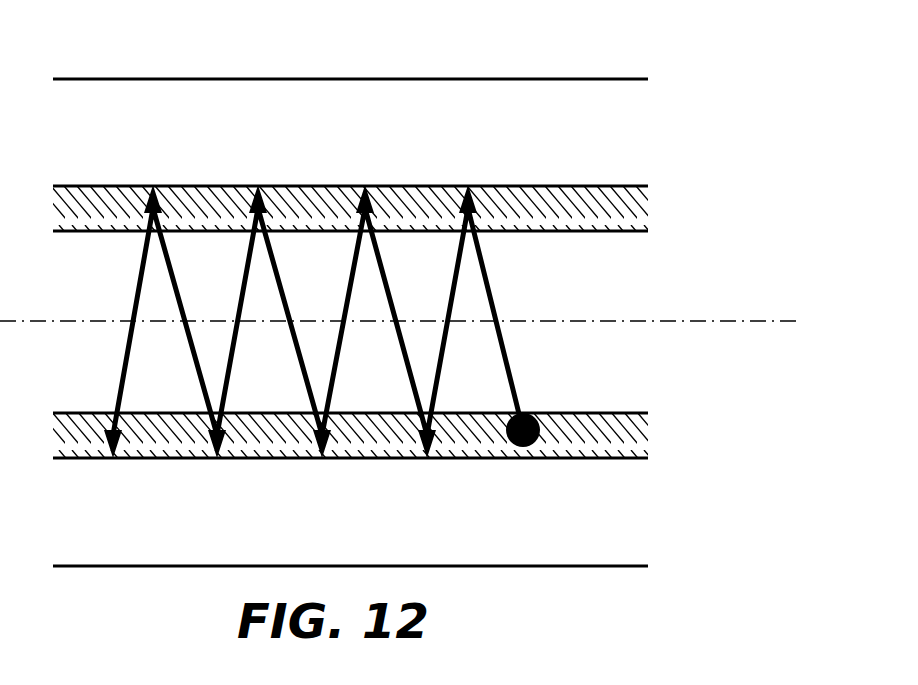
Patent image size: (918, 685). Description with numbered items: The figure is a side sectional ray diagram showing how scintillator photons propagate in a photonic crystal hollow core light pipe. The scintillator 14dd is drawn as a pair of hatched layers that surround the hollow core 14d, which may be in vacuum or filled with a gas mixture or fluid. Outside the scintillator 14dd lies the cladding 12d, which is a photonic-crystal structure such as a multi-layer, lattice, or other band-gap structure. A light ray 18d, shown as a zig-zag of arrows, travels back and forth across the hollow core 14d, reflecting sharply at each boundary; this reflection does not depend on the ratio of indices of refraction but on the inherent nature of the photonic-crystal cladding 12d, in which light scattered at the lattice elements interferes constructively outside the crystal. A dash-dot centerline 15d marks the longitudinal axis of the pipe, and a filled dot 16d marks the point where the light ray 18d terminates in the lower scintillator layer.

The cladding 12d is at (568, 92).
The hollow core 14d is at (388, 322).
The scintillator 14dd is at (649, 211).
The central axis 15d is at (670, 322).
The light absorber 16d is at (548, 413).
The light ray 18d is at (493, 283).